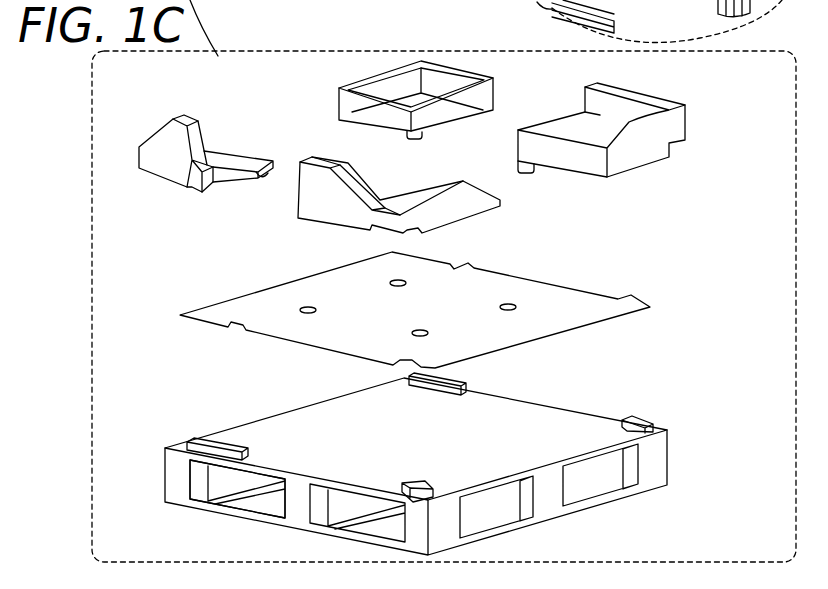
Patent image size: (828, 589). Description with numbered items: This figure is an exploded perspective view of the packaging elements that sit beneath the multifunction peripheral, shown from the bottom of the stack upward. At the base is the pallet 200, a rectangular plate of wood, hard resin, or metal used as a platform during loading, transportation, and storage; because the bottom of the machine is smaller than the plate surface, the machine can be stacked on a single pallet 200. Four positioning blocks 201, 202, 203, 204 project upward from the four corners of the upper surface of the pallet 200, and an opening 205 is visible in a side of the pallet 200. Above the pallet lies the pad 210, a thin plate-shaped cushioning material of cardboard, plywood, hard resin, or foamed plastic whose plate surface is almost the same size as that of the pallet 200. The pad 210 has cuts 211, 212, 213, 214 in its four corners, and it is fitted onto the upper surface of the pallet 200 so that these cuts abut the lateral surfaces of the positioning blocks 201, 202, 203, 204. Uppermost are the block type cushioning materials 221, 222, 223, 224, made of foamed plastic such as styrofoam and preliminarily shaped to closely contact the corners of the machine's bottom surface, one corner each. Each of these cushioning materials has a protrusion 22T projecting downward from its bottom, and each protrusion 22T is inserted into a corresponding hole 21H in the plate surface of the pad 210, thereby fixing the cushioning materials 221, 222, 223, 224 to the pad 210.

The pallet 200 is at (659, 467).
The positioning block 201 is at (417, 483).
The positioning block 202 is at (213, 442).
The positioning block 203 is at (465, 383).
The positioning block 204 is at (642, 420).
The side opening 205 is at (201, 479).
The pad 210 is at (555, 307).
The cut 211 is at (400, 363).
The cut 212 is at (208, 324).
The cut 213 is at (434, 259).
The cut 214 is at (636, 298).
The hole 21H is at (566, 263).
The first cushioning material 221 is at (328, 192).
The second cushioning material 222 is at (167, 155).
The third cushioning material 223 is at (340, 94).
The fourth cushioning material 224 is at (644, 142).
The protrusion 22T is at (270, 172).